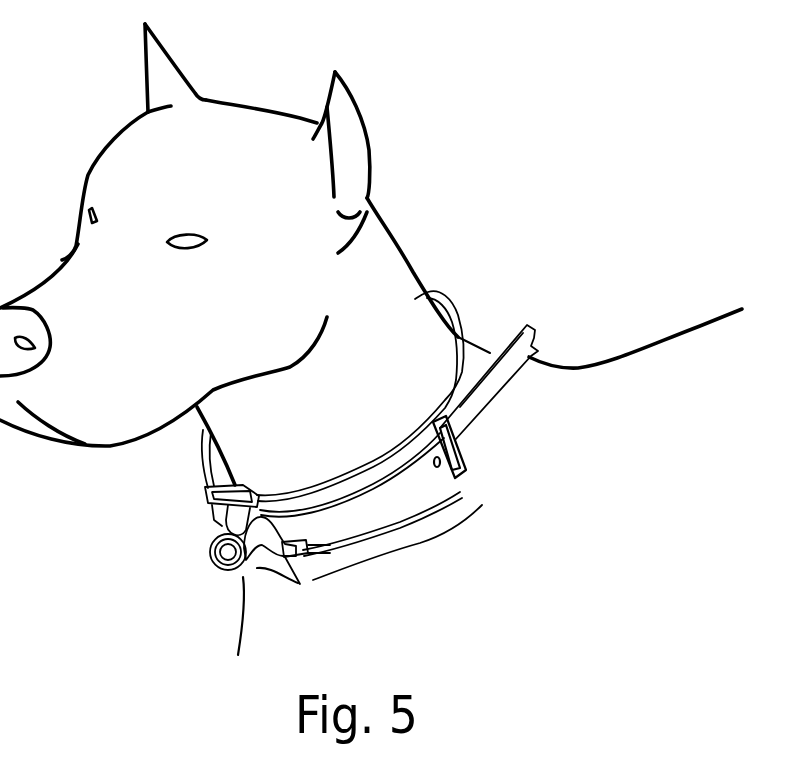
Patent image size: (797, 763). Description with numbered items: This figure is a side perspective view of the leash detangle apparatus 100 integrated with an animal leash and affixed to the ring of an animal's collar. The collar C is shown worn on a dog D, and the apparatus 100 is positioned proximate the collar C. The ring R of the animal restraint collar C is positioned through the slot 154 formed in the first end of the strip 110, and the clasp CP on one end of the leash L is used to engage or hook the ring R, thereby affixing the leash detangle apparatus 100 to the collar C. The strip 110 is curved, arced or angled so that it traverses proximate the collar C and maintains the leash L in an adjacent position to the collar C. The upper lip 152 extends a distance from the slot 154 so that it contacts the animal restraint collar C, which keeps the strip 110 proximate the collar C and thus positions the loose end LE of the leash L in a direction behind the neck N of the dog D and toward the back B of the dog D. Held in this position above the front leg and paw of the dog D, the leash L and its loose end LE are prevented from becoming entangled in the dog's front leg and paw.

The dog D is at (233, 320).
The neck N is at (390, 240).
The back B is at (643, 348).
The collar C is at (470, 370).
The leash detangle apparatus 100 is at (312, 528).
The leash L is at (412, 525).
The loose end LE is at (520, 320).
The strip 110 is at (420, 475).
The upper lip 152 is at (203, 497).
The slot 154 is at (213, 517).
The ring R is at (214, 543).
The clasp CP is at (245, 576).